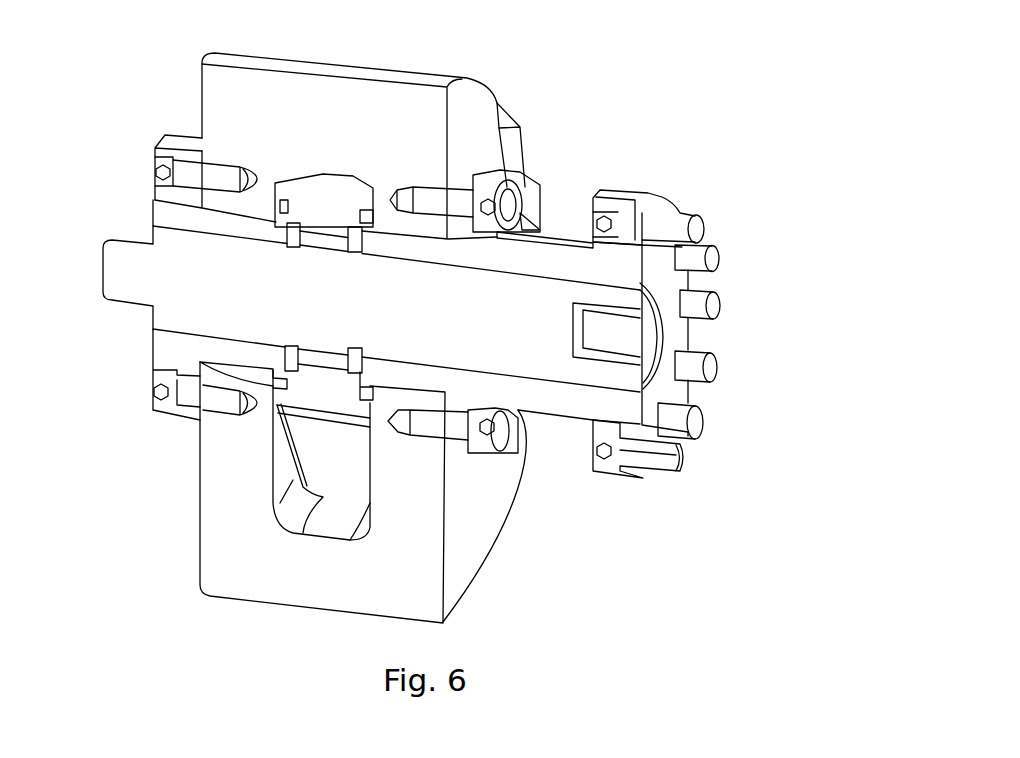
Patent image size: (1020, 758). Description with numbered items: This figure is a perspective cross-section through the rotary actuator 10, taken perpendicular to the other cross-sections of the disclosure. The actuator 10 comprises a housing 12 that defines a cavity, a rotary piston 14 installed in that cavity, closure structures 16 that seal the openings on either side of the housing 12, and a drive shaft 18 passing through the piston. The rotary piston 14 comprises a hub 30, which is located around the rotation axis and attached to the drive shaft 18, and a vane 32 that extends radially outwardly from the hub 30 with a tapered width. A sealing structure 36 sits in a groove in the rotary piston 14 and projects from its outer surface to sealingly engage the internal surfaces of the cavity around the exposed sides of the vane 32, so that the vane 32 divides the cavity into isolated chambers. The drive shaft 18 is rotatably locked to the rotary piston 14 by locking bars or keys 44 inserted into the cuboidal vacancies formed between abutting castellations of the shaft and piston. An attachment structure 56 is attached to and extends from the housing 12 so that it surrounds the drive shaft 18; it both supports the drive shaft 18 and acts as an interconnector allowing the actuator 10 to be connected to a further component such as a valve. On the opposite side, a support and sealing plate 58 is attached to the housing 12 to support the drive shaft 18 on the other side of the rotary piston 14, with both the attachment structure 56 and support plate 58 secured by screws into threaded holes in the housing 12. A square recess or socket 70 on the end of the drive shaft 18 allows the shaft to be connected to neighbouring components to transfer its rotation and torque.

The rotary actuator 10 is at (596, 149).
The housing 12 is at (337, 132).
The rotary piston 14 is at (281, 463).
The closure structure 16 is at (523, 143).
The drive shaft 18 is at (437, 327).
The hub 30 is at (337, 404).
The vane 32 is at (345, 477).
The sealing structure 36 is at (268, 195).
The locking bars or keys 44 is at (320, 238).
The attachment structure 56 is at (563, 397).
The support and sealing plate 58 is at (167, 208).
The square recess or socket 70 is at (630, 333).